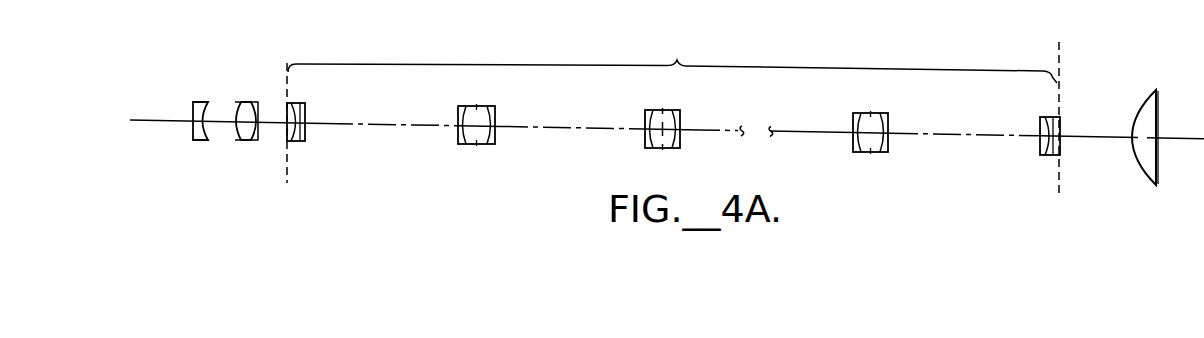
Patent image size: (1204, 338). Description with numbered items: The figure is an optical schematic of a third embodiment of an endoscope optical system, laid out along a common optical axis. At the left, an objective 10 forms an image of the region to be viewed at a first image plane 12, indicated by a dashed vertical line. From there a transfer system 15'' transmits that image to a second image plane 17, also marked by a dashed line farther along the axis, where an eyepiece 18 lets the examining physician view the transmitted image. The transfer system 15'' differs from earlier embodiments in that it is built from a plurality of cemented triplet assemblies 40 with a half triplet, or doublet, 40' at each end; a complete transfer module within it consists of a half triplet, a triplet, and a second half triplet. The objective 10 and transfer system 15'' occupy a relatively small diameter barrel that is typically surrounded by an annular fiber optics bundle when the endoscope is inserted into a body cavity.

The objective 10 is at (260, 71).
The first image plane 12 is at (288, 168).
The transfer system 15'' is at (672, 60).
The half triplet (doublet) 40' is at (315, 109).
The cemented triplet assembly 40 is at (586, 115).
The second image plane 17 is at (1060, 185).
The eyepiece 18 is at (1156, 90).